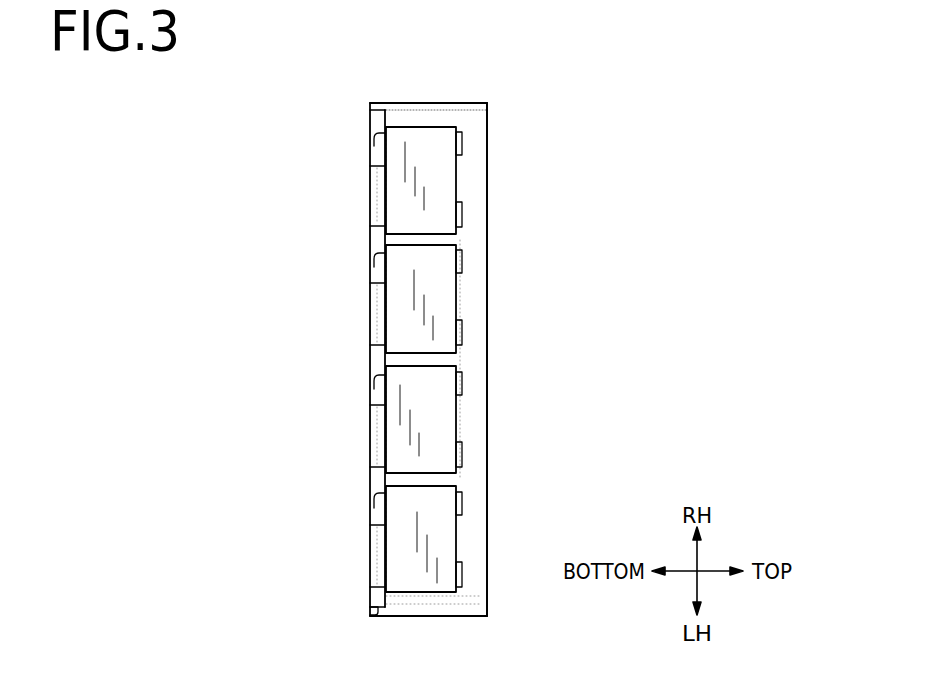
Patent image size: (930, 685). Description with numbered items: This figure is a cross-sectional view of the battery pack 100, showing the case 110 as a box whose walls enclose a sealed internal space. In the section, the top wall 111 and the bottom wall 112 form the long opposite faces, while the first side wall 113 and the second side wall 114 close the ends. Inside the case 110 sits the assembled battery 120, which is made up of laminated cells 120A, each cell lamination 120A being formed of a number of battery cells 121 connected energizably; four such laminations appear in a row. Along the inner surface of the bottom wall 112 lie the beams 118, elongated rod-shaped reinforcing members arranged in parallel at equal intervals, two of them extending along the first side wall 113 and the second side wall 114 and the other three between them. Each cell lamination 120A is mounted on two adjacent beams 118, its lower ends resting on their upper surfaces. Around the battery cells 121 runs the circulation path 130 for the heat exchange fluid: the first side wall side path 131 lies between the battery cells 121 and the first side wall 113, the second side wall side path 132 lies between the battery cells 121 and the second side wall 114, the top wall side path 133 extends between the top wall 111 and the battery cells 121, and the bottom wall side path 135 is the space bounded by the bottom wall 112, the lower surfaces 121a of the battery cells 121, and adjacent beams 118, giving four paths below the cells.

The battery pack 100 is at (360, 112).
The case 110 is at (378, 103).
The top wall 111 is at (487, 330).
The bottom wall 112 is at (377, 328).
The first side wall 113 is at (398, 618).
The second side wall 114 is at (398, 103).
The beams 118 is at (372, 138).
The assembled battery 120 is at (400, 127).
The laminated cells 120A is at (426, 127).
The battery cells 121 is at (449, 175).
The lower surfaces of the battery cells 121a is at (385, 168).
The circulation path 130 is at (416, 600).
The first side wall side path 131 is at (432, 601).
The second side wall side path 132 is at (442, 111).
The top wall side path 133 is at (470, 357).
The bottom wall side path 135 is at (377, 197).